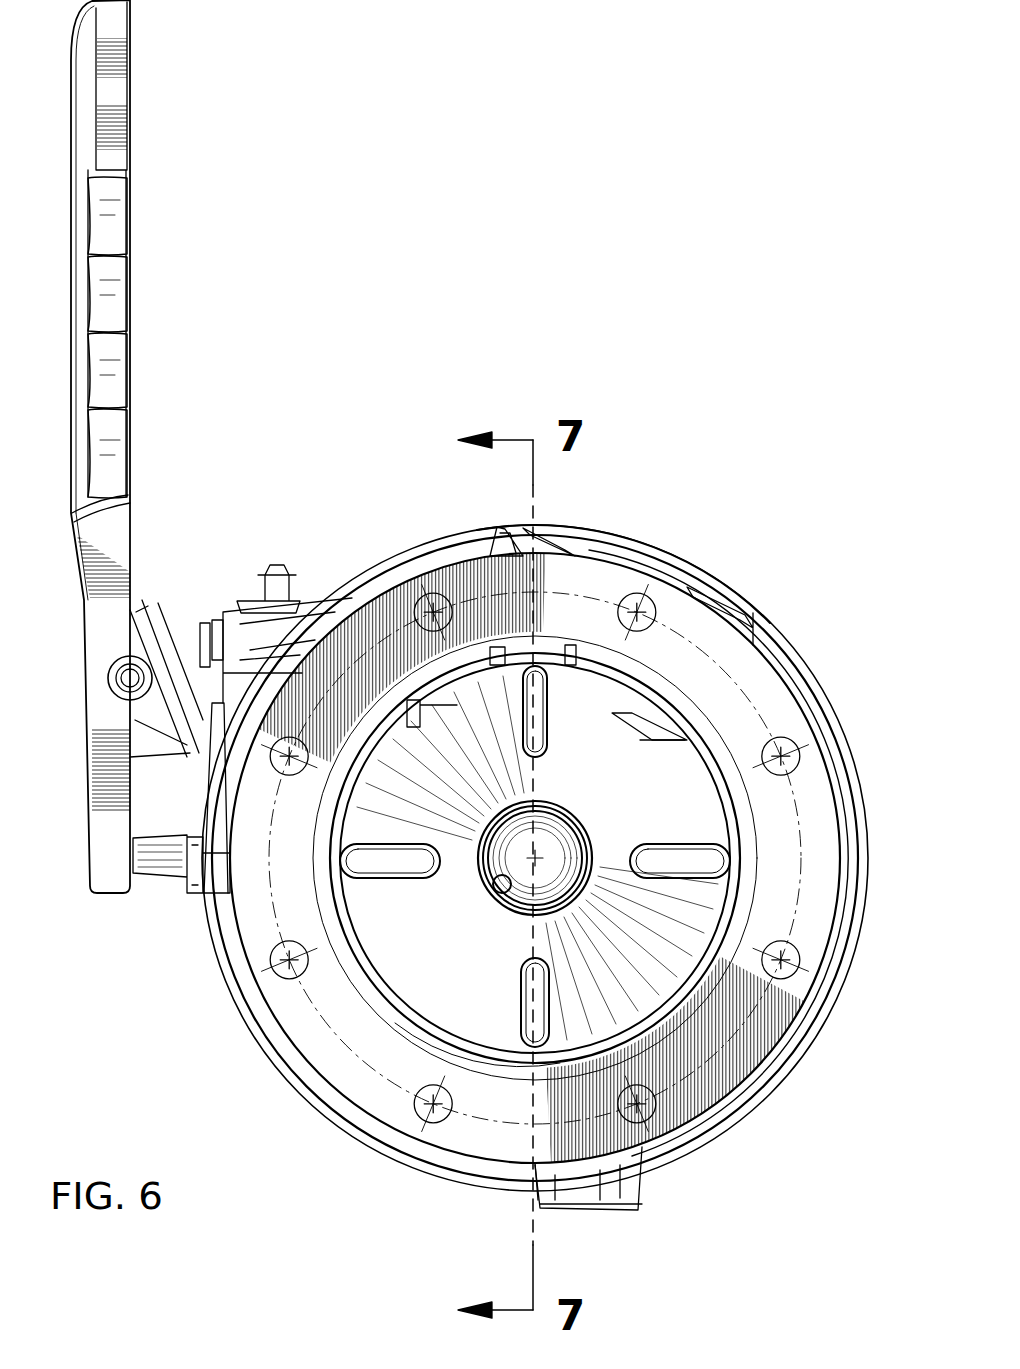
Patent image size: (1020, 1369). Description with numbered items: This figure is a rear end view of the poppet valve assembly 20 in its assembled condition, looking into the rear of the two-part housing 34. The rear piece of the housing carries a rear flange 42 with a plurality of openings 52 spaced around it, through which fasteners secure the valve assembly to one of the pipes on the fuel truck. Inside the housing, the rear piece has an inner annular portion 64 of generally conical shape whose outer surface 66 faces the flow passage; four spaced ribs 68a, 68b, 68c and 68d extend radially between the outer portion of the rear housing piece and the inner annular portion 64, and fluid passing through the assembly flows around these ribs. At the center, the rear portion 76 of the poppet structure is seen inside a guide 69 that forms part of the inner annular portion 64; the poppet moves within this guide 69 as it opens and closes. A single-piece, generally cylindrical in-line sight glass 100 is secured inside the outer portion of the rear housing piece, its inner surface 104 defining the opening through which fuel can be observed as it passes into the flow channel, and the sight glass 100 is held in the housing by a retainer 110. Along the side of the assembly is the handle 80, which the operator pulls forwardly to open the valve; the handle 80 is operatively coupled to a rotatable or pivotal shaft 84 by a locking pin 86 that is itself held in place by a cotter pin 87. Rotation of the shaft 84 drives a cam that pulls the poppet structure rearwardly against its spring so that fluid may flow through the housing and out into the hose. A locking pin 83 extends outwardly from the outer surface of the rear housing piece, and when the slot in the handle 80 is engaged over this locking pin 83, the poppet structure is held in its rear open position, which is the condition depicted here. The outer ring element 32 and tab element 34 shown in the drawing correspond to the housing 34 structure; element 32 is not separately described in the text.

The poppet valve assembly 20 is at (484, 340).
The outer ring 32 is at (718, 580).
The two-part housing 34 is at (645, 548).
The rear flange 42 is at (800, 692).
The openings 52 is at (790, 770).
The inner annular portion 64 is at (640, 718).
The outer surface 66 is at (632, 812).
The rib 68a is at (549, 727).
The rib 68b is at (690, 844).
The rib 68c is at (518, 975).
The rib 68d is at (372, 878).
The guide 69 is at (500, 892).
The rear portion 76 is at (548, 828).
The handle 80 is at (132, 292).
The locking pin 83 is at (160, 880).
The shaft 84 is at (186, 640).
The locking pin 86 is at (128, 692).
The cotter pin 87 is at (110, 690).
The sight glass 100 is at (670, 728).
The inner surface 104 is at (493, 1045).
The retainer 110 is at (337, 812).